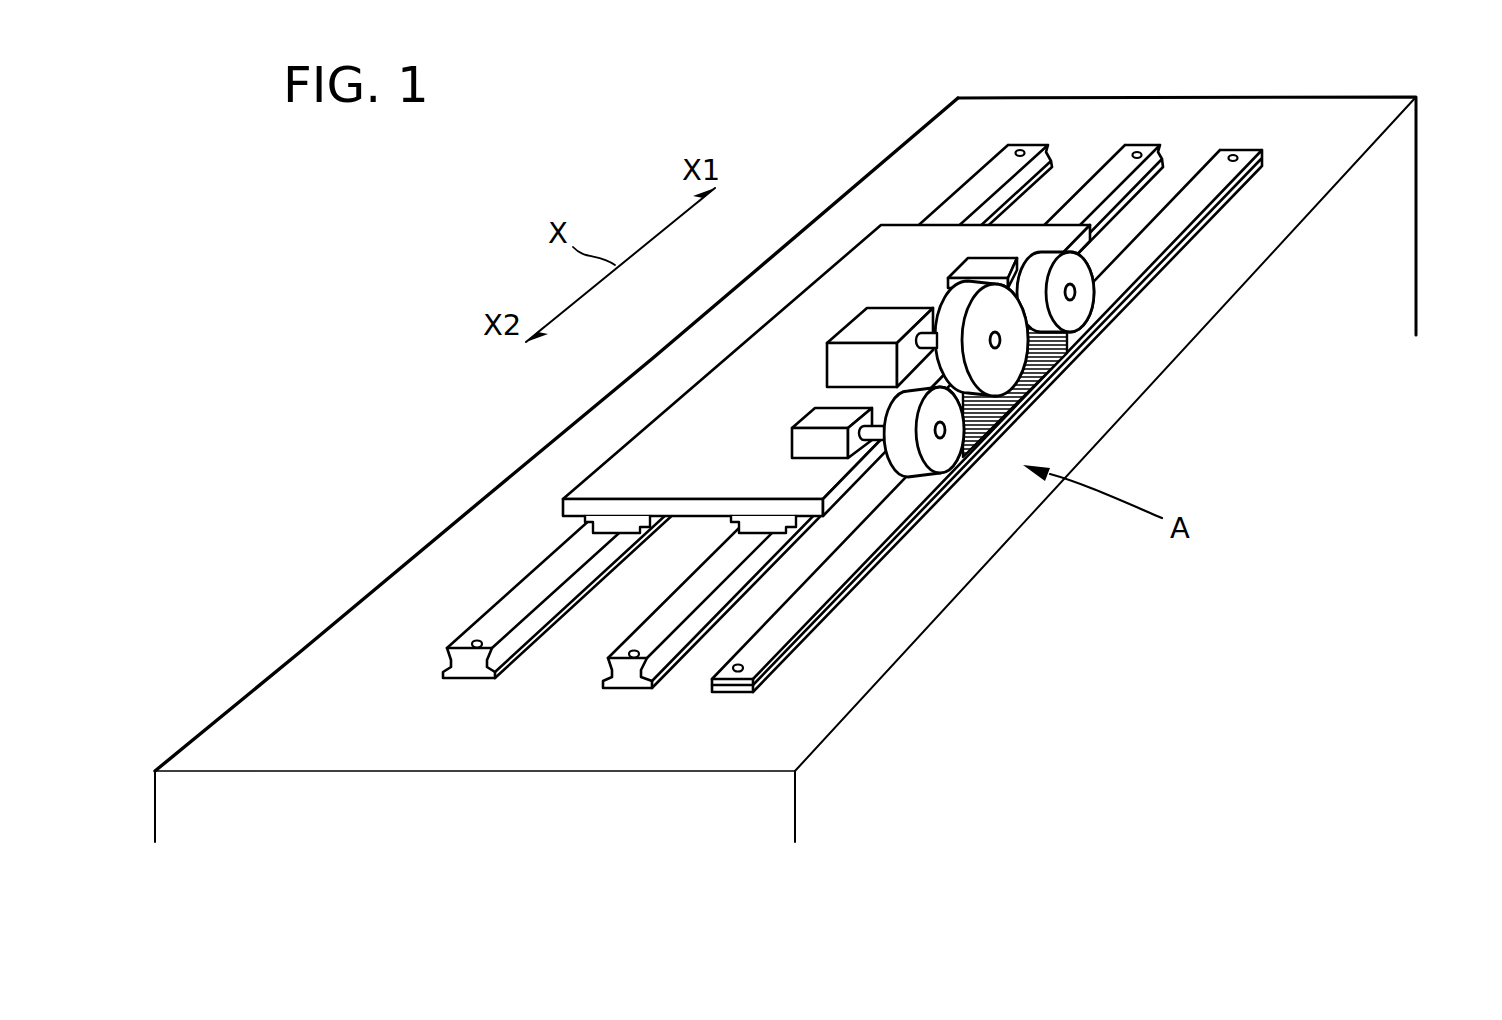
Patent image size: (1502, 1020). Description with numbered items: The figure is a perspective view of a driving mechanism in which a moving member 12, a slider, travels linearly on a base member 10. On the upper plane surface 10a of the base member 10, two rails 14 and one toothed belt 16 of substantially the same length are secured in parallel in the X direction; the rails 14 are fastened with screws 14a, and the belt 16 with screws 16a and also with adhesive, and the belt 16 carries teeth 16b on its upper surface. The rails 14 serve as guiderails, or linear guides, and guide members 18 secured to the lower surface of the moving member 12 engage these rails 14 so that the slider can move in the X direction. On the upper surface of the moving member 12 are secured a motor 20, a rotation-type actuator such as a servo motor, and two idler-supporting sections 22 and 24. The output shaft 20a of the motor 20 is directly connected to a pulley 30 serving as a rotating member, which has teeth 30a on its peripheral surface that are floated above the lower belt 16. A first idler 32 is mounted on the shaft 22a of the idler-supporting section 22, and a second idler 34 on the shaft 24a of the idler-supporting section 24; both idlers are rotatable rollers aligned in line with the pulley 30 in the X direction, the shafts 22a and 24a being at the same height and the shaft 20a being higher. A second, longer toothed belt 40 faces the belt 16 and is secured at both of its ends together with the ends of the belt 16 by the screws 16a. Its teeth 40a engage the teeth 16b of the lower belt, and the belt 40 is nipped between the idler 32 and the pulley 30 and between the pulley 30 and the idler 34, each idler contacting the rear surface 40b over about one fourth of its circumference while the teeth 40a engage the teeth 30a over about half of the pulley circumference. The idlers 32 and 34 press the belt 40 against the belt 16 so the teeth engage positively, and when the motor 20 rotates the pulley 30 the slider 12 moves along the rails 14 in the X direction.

The base member 10 is at (1398, 267).
The upper plane surface 10a is at (1240, 275).
The moving member 12 is at (738, 412).
The rails 14 is at (453, 679).
The screws 14a is at (477, 649).
The toothed belt 16 is at (723, 693).
The screws 16a is at (738, 674).
The teeth 16b is at (1050, 335).
The guide members 18 is at (763, 523).
The motor 20 is at (887, 322).
The output shaft 20a is at (922, 332).
The idler-supporting section 22 is at (830, 450).
The shaft 22a is at (865, 437).
The idler-supporting section 24 is at (987, 265).
The shaft 24a is at (1000, 257).
The pulley 30 is at (1015, 338).
The teeth 30a is at (972, 430).
The first idler 32 is at (945, 455).
The second idler 34 is at (1087, 304).
The toothed belt 40 is at (787, 650).
The teeth 40a is at (948, 332).
The rear surface 40b is at (802, 603).